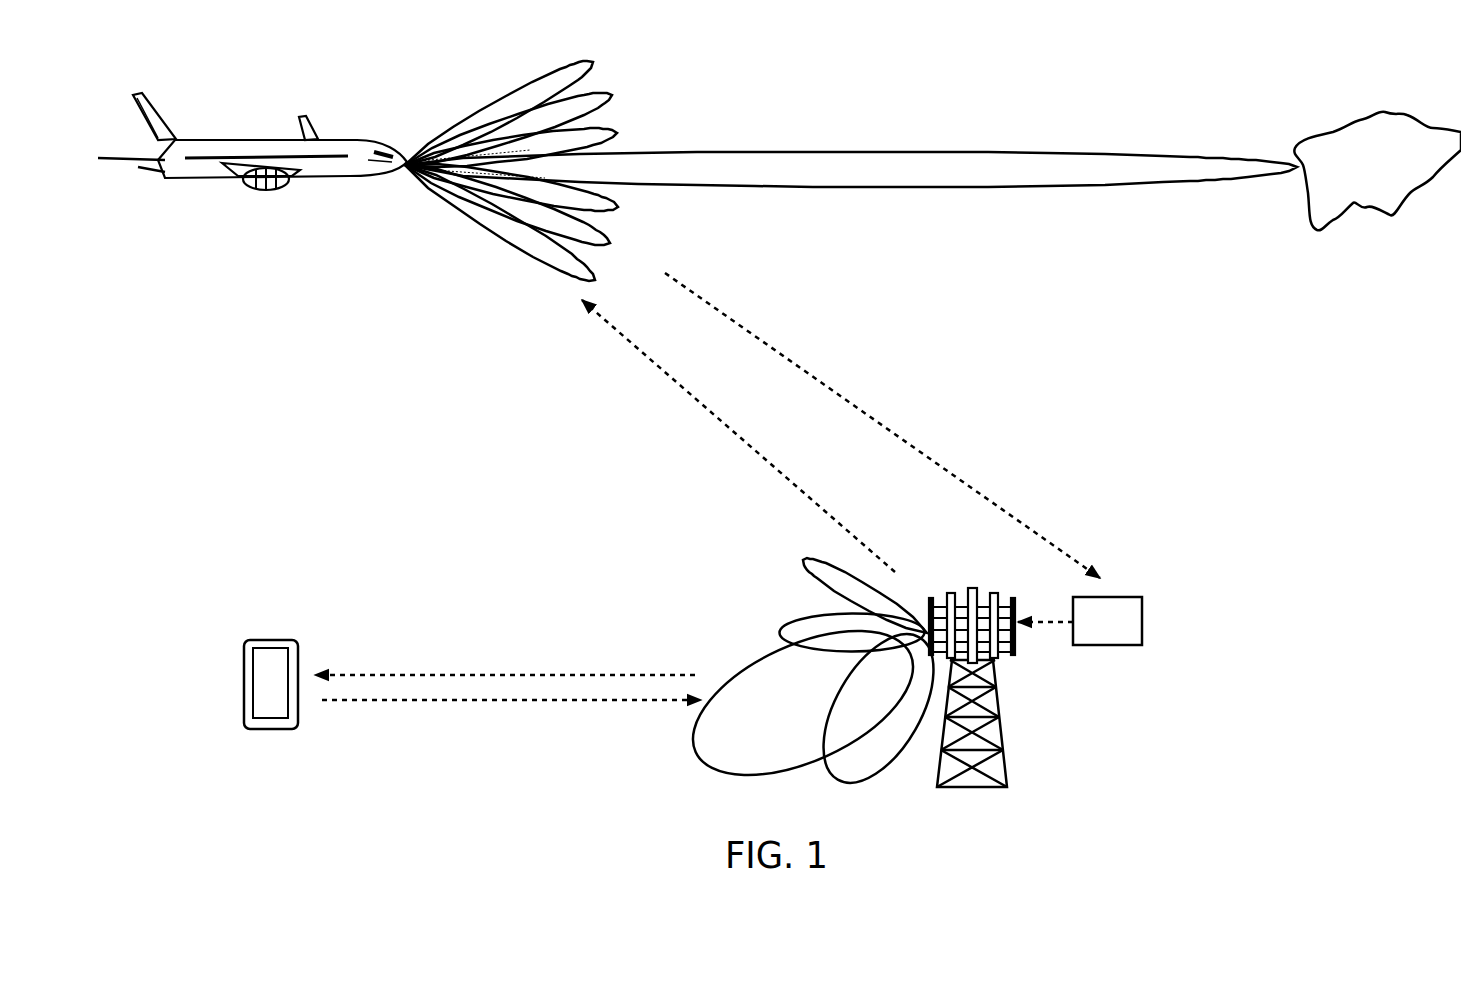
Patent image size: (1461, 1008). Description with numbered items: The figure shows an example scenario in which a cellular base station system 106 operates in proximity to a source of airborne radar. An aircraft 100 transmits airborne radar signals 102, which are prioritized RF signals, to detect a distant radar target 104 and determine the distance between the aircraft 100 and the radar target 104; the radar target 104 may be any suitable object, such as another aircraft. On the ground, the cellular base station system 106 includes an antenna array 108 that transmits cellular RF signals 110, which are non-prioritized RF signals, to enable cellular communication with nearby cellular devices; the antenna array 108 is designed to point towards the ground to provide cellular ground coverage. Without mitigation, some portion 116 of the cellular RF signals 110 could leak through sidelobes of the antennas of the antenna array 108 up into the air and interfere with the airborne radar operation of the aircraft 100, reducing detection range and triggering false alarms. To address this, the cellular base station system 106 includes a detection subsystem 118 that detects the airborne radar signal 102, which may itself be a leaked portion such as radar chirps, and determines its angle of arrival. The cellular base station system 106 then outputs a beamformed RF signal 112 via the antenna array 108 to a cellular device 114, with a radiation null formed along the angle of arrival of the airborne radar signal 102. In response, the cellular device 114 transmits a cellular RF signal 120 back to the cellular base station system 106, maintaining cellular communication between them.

The aircraft 100 is at (253, 140).
The airborne radar signals 102 is at (650, 104).
The radar target 104 is at (1360, 118).
The cellular base station system 106 is at (1003, 740).
The antenna array 108 is at (972, 588).
The cellular RF signals 110 is at (780, 612).
The beamformed RF signal 112 is at (448, 675).
The cellular device 114 is at (270, 640).
The leaked cellular signal 116 is at (705, 408).
The detection subsystem 118 is at (1142, 630).
The cellular RF signal 120 is at (443, 700).